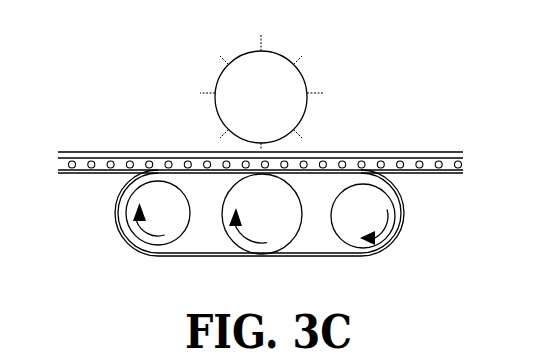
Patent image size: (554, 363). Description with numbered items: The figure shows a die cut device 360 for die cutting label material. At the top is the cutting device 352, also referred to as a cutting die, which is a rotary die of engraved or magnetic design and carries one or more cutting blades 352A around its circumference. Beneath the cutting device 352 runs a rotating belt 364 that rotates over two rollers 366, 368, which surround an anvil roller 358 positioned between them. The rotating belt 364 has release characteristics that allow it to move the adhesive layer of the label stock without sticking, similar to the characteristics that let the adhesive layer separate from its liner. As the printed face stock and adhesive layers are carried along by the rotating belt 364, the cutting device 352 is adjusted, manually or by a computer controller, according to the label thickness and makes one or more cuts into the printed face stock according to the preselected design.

The cutting device 352 is at (315, 73).
The cutting blades 352A is at (222, 52).
The die cut device 360 is at (340, 150).
The rotating belt 364 is at (105, 215).
The roller 366 is at (153, 242).
The anvil roller 358 is at (245, 247).
The roller 368 is at (356, 248).